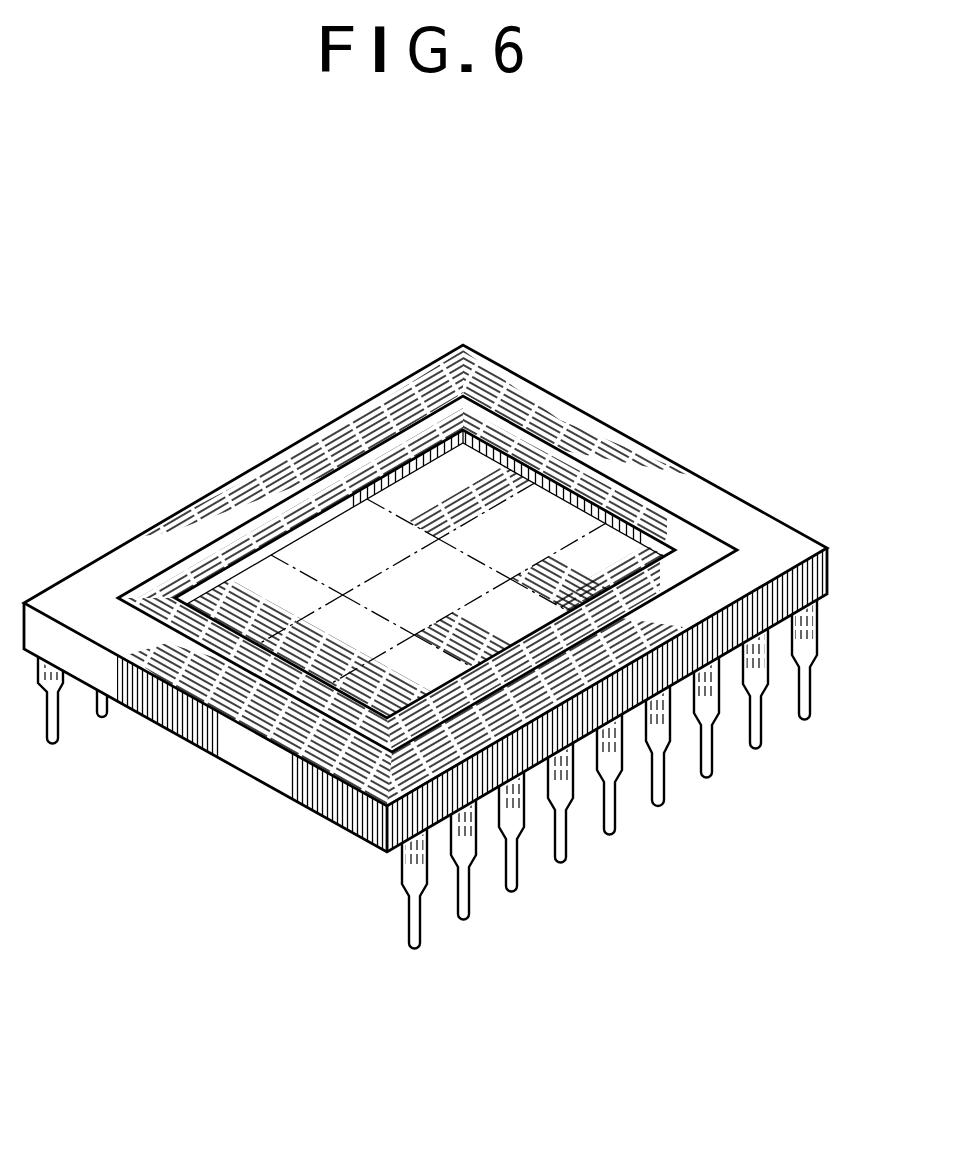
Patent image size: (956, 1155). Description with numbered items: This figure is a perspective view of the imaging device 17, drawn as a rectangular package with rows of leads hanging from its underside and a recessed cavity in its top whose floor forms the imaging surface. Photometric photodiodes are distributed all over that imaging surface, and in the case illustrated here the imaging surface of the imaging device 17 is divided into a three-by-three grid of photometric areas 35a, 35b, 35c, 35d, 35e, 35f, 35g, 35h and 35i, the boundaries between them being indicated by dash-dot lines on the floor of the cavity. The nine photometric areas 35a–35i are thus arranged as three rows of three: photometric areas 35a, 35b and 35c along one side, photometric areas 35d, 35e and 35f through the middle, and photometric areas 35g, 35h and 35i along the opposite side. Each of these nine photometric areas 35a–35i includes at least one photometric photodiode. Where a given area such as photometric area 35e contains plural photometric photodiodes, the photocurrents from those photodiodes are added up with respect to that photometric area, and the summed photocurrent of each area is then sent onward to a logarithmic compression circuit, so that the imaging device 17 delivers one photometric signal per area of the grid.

The imaging device 17 is at (355, 849).
The photometric area 35a is at (257, 597).
The photometric area 35b is at (353, 543).
The photometric area 35c is at (447, 485).
The photometric area 35d is at (310, 650).
The photometric area 35e is at (450, 580).
The photometric area 35f is at (537, 513).
The photometric area 35g is at (440, 688).
The photometric area 35h is at (500, 637).
The photometric area 35i is at (600, 580).